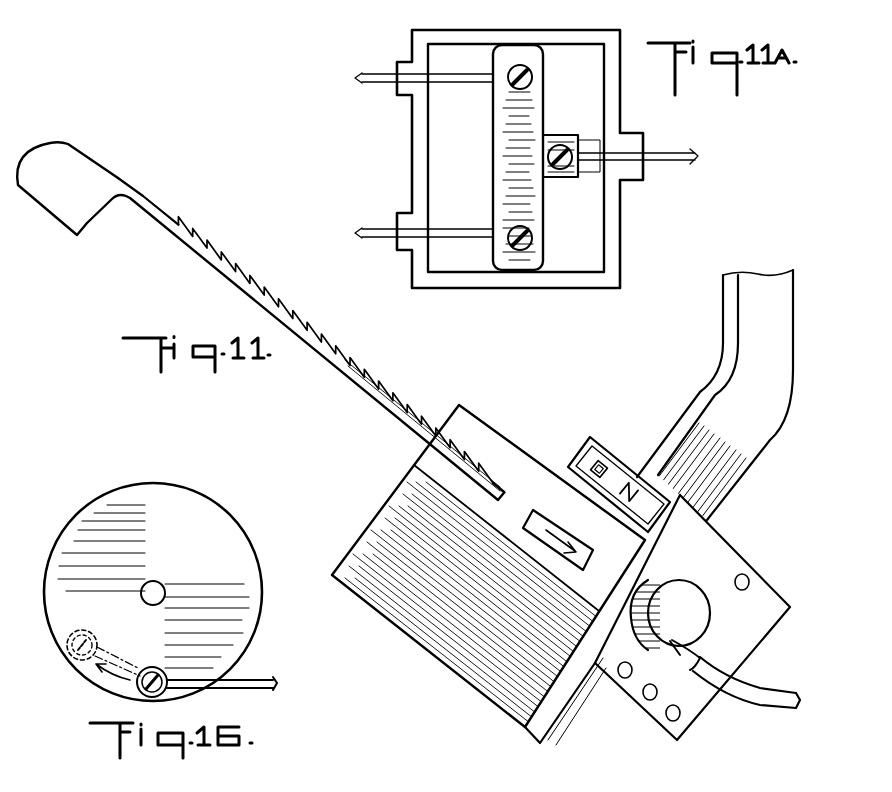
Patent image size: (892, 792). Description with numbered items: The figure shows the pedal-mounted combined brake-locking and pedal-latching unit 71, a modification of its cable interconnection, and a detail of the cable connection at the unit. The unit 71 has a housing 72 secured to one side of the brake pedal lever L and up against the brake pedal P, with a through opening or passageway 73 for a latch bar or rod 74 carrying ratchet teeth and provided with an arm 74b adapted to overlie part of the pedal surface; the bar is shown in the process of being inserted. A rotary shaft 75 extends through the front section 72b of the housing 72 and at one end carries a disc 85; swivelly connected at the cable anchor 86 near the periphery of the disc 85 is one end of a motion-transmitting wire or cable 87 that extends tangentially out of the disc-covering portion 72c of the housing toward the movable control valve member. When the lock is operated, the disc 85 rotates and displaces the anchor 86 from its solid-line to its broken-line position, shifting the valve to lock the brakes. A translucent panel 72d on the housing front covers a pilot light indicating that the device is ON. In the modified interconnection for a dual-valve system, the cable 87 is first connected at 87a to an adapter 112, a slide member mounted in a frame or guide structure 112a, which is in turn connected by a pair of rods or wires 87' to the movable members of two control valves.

In FIG. 11A, the frame or guide structure 112a is at (617, 242).
In FIG. 11A, the adapter 112 is at (533, 212).
In FIG. 11A, the rods or wires 87' is at (362, 151).
In FIG. 11A, the motion-transmitting wire or cable 87 is at (638, 176).
In FIG. 11, the motion-transmitting wire or cable 87 is at (749, 682).
In FIG. 16, the motion-transmitting wire or cable 87 is at (234, 704).
In FIG. 11A, the cable connection point 87a is at (588, 155).
In FIG. 11, the latch bar or rod 74 is at (388, 414).
In FIG. 11, the arm 74b is at (88, 222).
In FIG. 11, the housing 72 is at (591, 437).
In FIG. 11, the front section of the housing 72b is at (485, 435).
In FIG. 11, the disc-covering portion of the housing 72c is at (690, 578).
In FIG. 11, the translucent panel 72d is at (620, 472).
In FIG. 11, the through opening or passageway 73 is at (588, 556).
In FIG. 11, the brake pedal P is at (524, 727).
In FIG. 11, the brake pedal lever L is at (733, 460).
In FIG. 11, the combined brake-locking and pedal-latching unit 71 is at (738, 709).
In FIG. 16, the disc 85 is at (83, 507).
In FIG. 16, the rotary shaft 75 is at (158, 590).
In FIG. 16, the cable anchor 86 is at (158, 671).